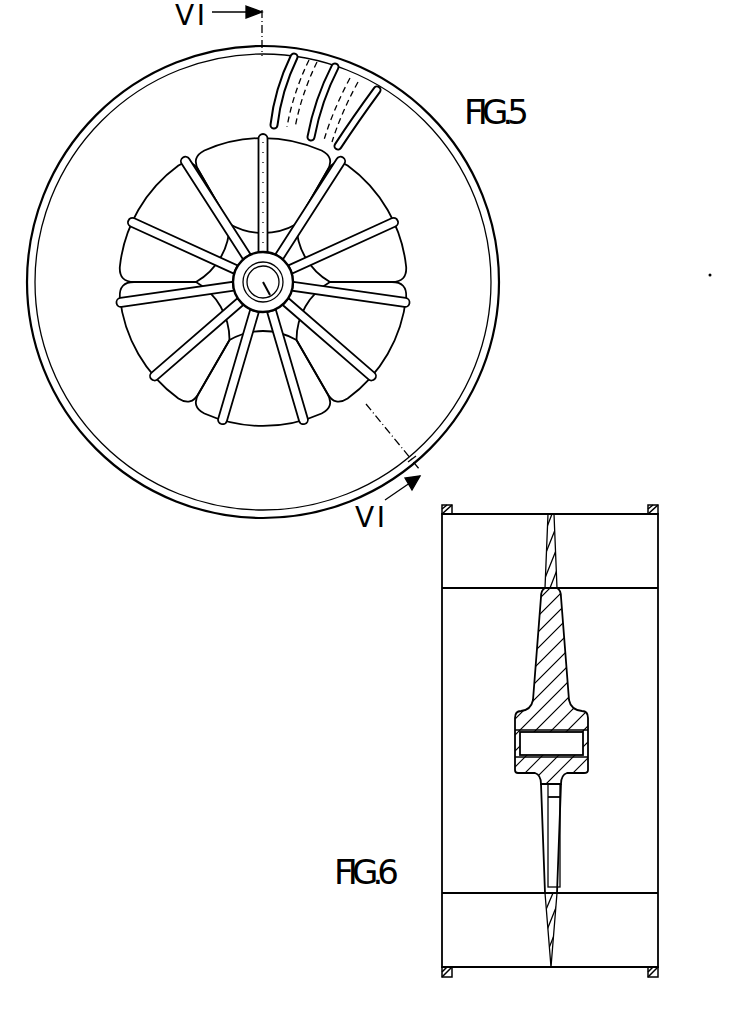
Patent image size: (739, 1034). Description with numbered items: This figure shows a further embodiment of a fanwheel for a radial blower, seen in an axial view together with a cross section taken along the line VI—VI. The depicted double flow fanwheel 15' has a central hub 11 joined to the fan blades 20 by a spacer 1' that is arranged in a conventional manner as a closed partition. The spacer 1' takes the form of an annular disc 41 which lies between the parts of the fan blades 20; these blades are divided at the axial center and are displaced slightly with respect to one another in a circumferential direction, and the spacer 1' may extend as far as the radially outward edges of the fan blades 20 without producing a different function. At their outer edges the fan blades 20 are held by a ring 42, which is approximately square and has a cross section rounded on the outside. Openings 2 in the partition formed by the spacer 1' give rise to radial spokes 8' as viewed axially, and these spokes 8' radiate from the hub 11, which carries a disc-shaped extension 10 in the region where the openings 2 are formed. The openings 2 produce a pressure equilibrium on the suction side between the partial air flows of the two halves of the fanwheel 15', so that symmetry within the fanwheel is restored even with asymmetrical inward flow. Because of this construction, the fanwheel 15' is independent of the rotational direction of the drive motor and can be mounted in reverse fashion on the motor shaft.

In FIG. 5, the double flow fanwheel 15′ is at (495, 234).
In FIG. 6, the double flow fanwheel 15′ is at (430, 653).
In FIG. 5, the ring 42 is at (467, 183).
In FIG. 6, the ring 42 is at (451, 506).
In FIG. 5, the annular disc 41 is at (237, 480).
In FIG. 6, the annular disc 41 is at (556, 546).
In FIG. 5, the openings 2 is at (313, 395).
In FIG. 6, the openings 2 is at (553, 834).
In FIG. 5, the radial spokes 8′ is at (302, 364).
In FIG. 6, the radial spokes 8′ is at (562, 648).
In FIG. 5, the hub 11 is at (248, 306).
In FIG. 6, the hub 11 is at (576, 718).
In FIG. 5, the fan blades 20 is at (300, 70).
In FIG. 6, the spacer 1′ is at (528, 665).
In FIG. 6, the disc-shaped extension 10 is at (553, 797).